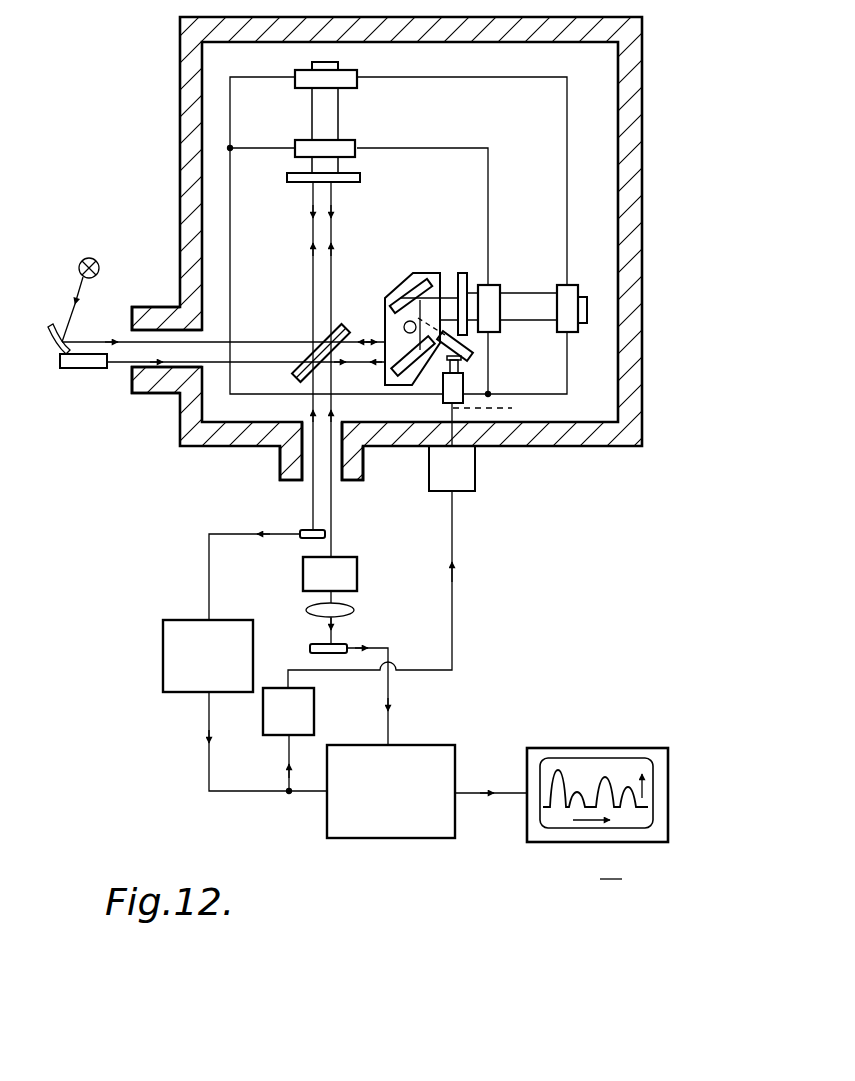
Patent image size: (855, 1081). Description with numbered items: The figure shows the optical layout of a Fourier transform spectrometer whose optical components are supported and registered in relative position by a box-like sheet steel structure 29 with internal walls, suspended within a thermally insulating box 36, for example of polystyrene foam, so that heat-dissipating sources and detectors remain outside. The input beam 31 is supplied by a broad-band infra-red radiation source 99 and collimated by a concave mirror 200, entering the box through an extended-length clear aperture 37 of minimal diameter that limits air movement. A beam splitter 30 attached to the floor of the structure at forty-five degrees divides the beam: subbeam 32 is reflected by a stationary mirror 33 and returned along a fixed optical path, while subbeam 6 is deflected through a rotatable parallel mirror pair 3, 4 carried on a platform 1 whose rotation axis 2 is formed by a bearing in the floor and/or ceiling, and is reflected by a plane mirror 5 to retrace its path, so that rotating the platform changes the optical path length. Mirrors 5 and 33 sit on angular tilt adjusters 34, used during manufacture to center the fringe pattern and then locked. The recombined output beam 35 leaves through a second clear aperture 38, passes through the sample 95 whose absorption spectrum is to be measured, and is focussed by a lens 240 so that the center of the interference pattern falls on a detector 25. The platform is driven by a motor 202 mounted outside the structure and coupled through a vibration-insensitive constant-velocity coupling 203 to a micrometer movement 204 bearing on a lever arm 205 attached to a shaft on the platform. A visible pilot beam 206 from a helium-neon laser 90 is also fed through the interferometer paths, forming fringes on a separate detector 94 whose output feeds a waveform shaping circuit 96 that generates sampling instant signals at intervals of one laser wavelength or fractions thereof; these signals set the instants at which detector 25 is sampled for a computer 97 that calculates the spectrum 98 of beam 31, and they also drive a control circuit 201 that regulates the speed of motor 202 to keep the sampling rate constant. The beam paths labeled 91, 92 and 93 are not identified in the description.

The platform 1 is at (432, 278).
The rotation axis 2 is at (412, 318).
The parallel mirror 3 is at (418, 380).
The parallel mirror 4 is at (420, 285).
The plane mirror 5 is at (462, 272).
The subbeam 6 is at (367, 338).
The detector 25 is at (322, 645).
The sheet steel structure 29 is at (540, 121).
The beam splitter 30 is at (337, 333).
The input beam 31 is at (106, 338).
The subbeam 32 is at (334, 232).
The stationary mirror 33 is at (362, 178).
The angular tilt adjuster 34 is at (348, 113).
The output beam 35 is at (333, 507).
The thermally insulating box 36 is at (575, 437).
The clear aperture 37 is at (132, 372).
The clear aperture 38 is at (305, 466).
The helium-neon laser 90 is at (83, 369).
The light beam 91 is at (311, 232).
The light beam 92 is at (356, 365).
The light beam 93 is at (311, 505).
The detector 94 is at (302, 540).
The sample 95 is at (350, 575).
The waveform shaping circuit 96 is at (166, 651).
The computer 97 is at (392, 810).
The spectrum 98 is at (563, 835).
The broad-band infra-red radiation source 99 is at (89, 257).
The concave mirror 200 is at (62, 340).
The control circuit 201 is at (278, 715).
The motor 202 is at (463, 478).
The constant-velocity coupling 203 is at (503, 412).
The micrometer movement 204 is at (465, 387).
The lever arm 205 is at (472, 350).
The pilot beam 206 is at (218, 366).
The lens 240 is at (346, 613).